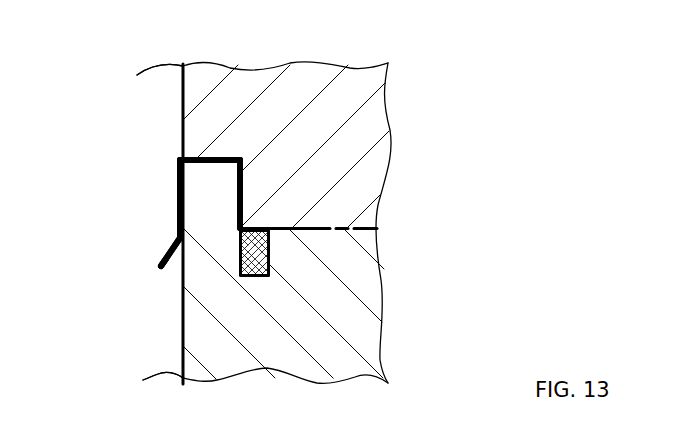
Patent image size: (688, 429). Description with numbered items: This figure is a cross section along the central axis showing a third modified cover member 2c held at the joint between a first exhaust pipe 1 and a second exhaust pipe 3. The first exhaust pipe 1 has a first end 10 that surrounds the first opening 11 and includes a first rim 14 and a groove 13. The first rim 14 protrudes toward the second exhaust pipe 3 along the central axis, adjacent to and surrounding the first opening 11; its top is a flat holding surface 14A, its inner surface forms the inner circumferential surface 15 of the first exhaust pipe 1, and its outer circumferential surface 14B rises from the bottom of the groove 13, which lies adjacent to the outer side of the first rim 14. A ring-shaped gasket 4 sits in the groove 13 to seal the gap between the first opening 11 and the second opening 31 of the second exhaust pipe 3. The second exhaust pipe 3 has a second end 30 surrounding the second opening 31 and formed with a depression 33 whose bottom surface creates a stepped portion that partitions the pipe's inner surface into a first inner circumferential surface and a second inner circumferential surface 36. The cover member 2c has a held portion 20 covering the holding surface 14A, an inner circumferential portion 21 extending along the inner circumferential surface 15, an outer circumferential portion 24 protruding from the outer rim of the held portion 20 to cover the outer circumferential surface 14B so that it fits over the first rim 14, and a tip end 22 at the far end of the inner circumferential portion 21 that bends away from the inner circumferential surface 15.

The first exhaust pipe 1 is at (400, 340).
The second exhaust pipe 3 is at (392, 102).
The first end 10 is at (352, 229).
The second end 30 is at (352, 228).
The second inner circumferential surface 36 is at (182, 77).
The inner circumferential surface 15 is at (183, 353).
The held portion 20 is at (180, 157).
The depression 33 is at (234, 152).
The outer circumferential portion 24 is at (243, 188).
The holding surface 14A is at (178, 184).
The first rim 14 is at (212, 267).
The outer circumferential surface 14B is at (209, 264).
The cover member 2c is at (158, 215).
The inner circumferential portion 21 is at (177, 240).
The tip end 22 is at (172, 268).
The gasket 4 is at (262, 265).
The groove 13 is at (258, 278).
The second opening 31 is at (58, 202).
The first opening 11 is at (62, 243).